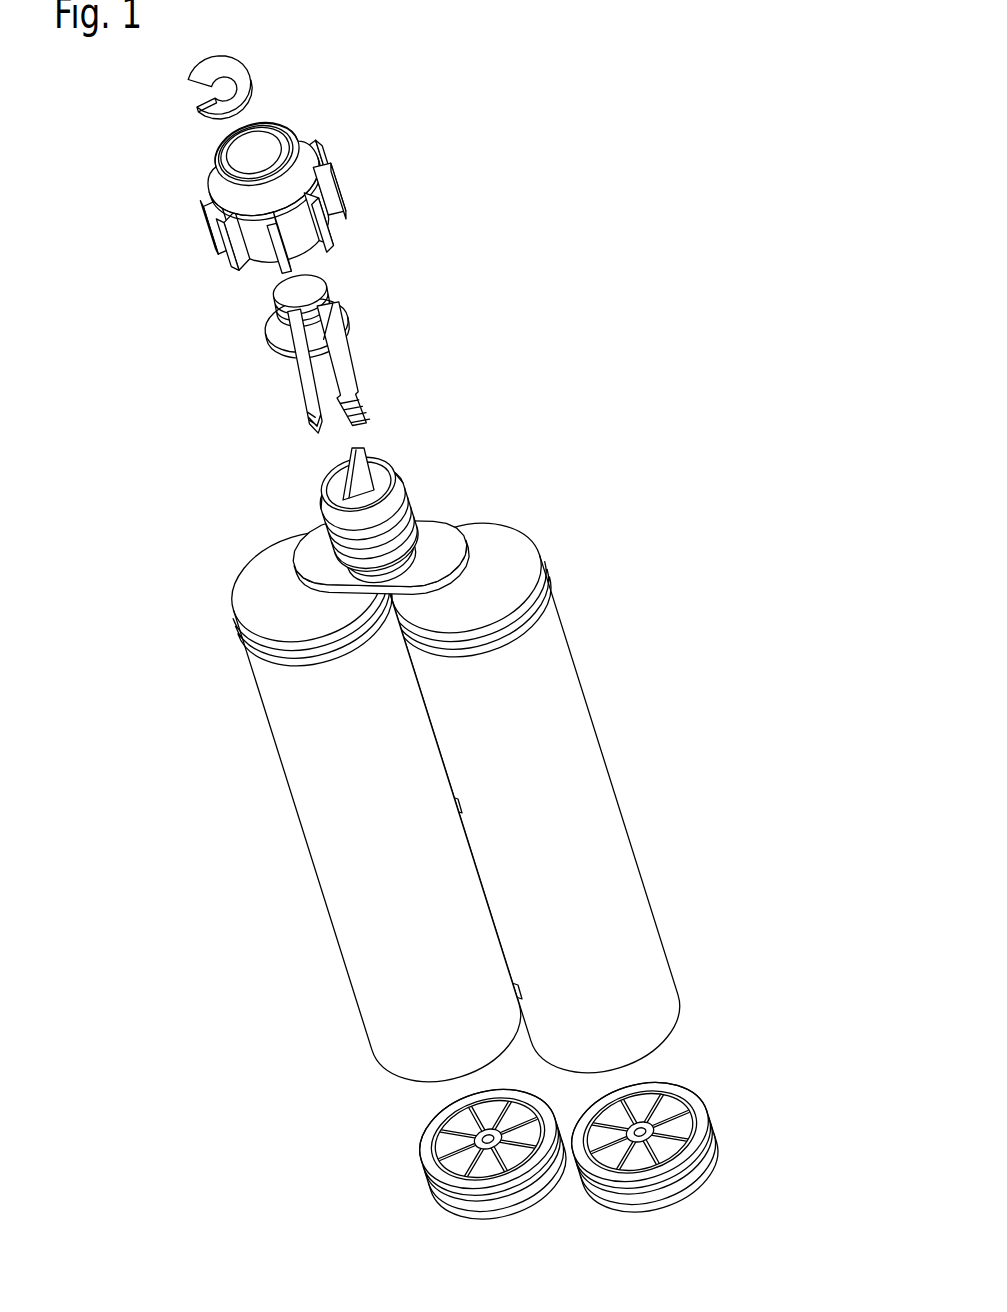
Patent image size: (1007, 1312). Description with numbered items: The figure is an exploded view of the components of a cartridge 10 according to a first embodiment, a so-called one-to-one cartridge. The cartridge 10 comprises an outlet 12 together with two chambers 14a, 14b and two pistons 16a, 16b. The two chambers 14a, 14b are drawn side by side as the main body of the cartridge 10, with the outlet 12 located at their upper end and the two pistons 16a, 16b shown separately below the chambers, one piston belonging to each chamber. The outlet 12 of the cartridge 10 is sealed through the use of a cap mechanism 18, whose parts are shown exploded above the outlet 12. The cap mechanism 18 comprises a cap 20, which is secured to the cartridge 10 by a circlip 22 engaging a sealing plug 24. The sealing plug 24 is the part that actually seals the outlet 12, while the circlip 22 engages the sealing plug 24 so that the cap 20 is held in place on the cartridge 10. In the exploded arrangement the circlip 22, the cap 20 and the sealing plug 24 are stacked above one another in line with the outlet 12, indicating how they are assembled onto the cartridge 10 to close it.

The cartridge 10 is at (454, 765).
The outlet 12 is at (335, 525).
The chamber 14a is at (330, 804).
The chamber 14b is at (579, 740).
The piston 16a is at (430, 1142).
The piston 16b is at (680, 1120).
The cap mechanism 18 is at (315, 33).
The cap 20 is at (212, 208).
The circlip 22 is at (212, 102).
The sealing plug 24 is at (282, 345).